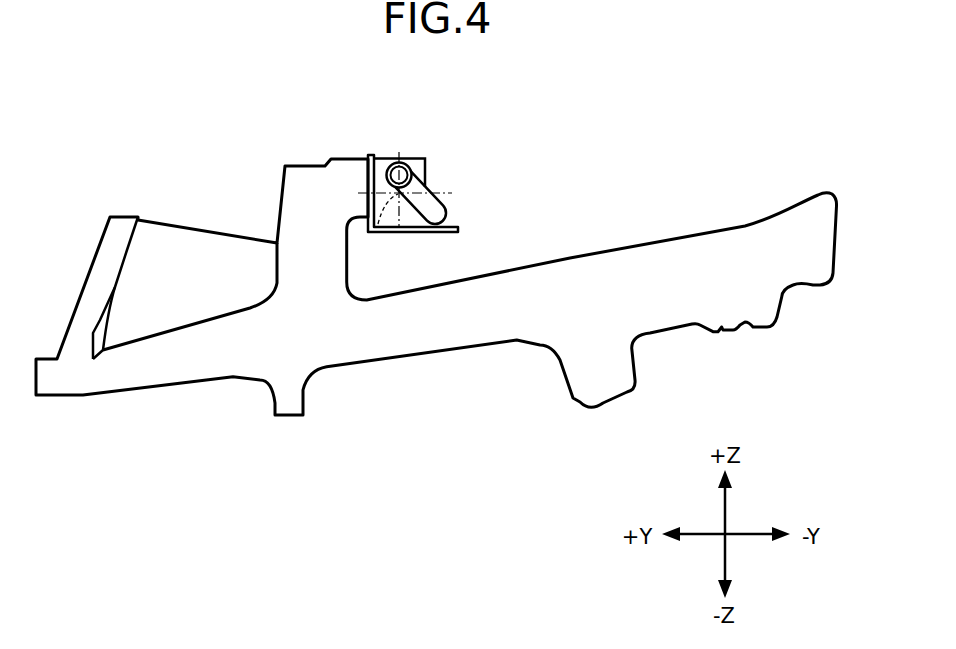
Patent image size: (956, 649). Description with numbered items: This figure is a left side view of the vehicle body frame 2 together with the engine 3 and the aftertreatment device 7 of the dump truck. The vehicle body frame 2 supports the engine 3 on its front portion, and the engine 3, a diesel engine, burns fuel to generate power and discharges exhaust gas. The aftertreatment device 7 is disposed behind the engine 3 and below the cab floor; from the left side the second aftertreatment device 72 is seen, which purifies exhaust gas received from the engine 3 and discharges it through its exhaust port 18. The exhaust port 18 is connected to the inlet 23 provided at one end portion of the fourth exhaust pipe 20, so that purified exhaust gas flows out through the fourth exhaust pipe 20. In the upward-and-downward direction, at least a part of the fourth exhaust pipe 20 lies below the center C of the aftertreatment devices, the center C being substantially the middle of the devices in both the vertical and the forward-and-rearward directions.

The vehicle body frame 2 is at (467, 327).
The engine 3 is at (192, 253).
The aftertreatment device 7 is at (467, 173).
The second aftertreatment device 72 is at (425, 167).
The exhaust port 18 is at (387, 160).
The fourth exhaust pipe 20 is at (440, 202).
The inlet 23 is at (402, 160).
The center C is at (408, 216).